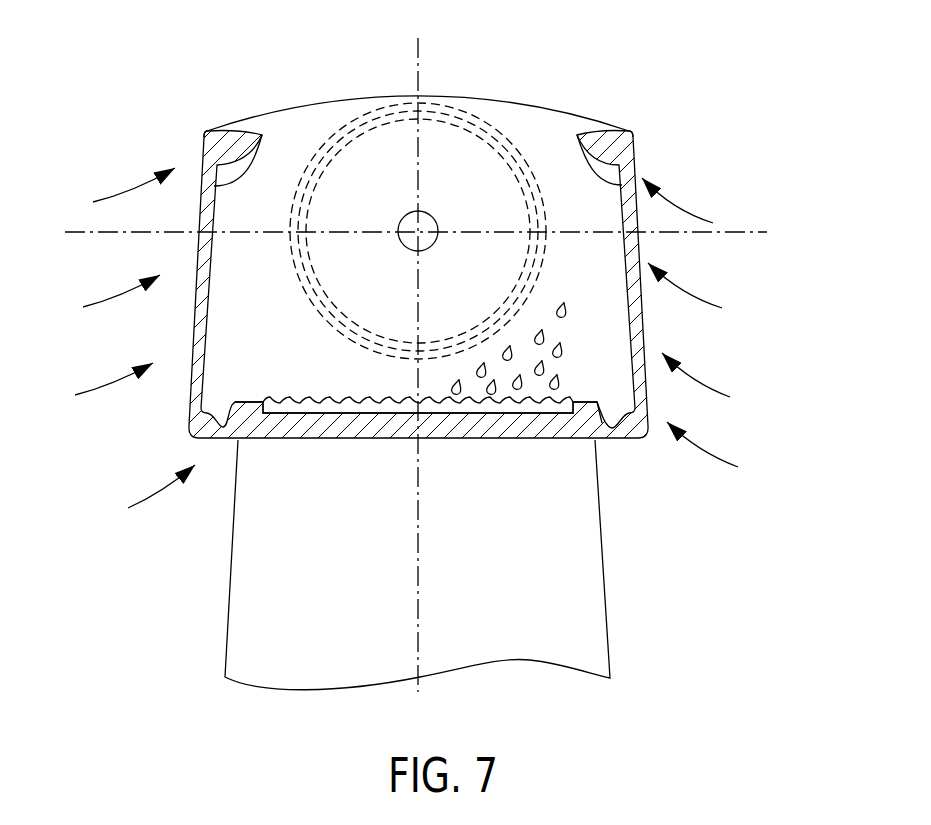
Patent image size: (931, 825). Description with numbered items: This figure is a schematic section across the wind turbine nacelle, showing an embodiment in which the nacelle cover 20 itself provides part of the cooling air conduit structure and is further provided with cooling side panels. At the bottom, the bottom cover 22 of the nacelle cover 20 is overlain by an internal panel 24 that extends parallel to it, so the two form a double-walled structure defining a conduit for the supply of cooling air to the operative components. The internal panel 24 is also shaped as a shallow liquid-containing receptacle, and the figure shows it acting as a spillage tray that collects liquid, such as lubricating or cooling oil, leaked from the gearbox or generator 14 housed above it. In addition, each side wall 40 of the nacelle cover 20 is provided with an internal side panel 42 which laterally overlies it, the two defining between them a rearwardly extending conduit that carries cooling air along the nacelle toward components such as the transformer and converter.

The gearbox and generator 14 is at (403, 153).
The nacelle cover 20 is at (579, 112).
The bottom cover 22 is at (282, 440).
The internal panel 24 is at (602, 440).
The side wall 40 is at (203, 147).
The internal side panel 42 is at (262, 135).